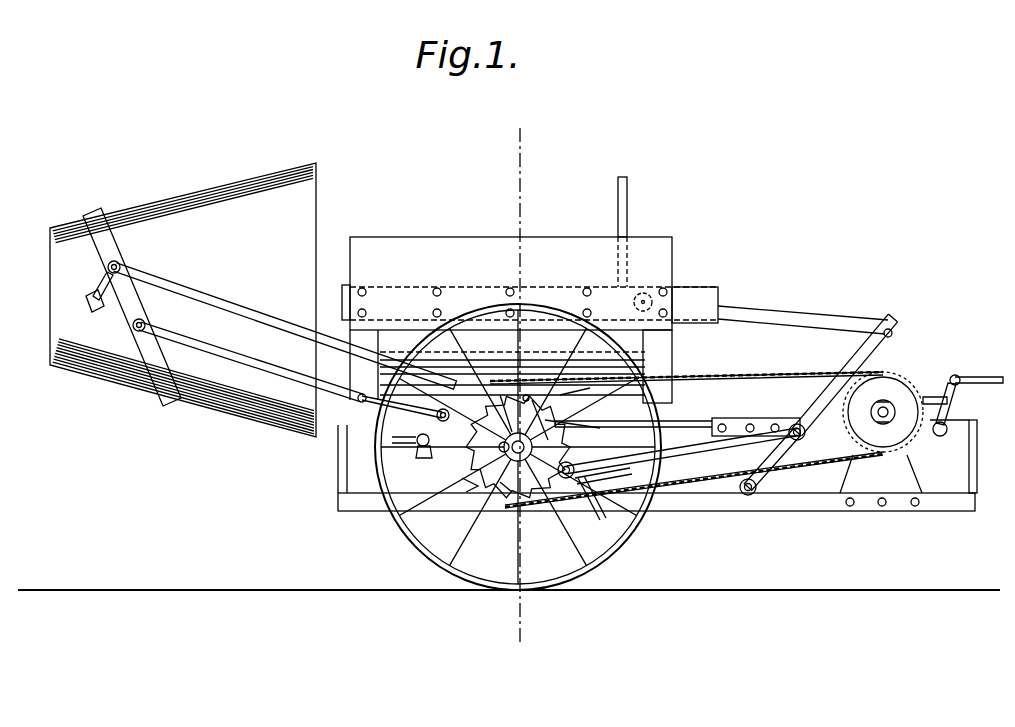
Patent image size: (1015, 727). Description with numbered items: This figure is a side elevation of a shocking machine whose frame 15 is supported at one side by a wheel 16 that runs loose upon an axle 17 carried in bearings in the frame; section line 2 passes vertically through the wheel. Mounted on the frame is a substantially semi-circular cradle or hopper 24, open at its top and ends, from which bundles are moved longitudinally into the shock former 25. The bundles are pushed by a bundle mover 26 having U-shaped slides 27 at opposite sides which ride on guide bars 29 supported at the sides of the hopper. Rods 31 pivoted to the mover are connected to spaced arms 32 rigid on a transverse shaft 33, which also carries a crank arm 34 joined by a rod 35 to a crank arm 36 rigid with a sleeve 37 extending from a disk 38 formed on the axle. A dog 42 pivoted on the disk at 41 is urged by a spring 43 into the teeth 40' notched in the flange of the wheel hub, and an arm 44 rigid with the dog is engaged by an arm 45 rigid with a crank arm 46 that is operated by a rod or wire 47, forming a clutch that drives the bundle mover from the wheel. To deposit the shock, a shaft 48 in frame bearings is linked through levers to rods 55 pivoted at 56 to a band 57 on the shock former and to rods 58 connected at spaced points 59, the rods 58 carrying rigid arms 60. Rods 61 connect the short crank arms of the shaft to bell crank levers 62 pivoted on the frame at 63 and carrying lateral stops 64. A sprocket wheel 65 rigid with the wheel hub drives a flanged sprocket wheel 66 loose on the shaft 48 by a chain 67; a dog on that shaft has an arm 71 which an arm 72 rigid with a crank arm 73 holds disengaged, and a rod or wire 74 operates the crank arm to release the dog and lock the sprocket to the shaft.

The section line 2- 2 is at (498, 130).
The frame 15 is at (965, 432).
The wheel 16 is at (406, 530).
The axle 17 is at (518, 446).
The cradle or hopper 24 is at (554, 247).
The shock former 25 is at (235, 195).
The bundle mover 26 is at (628, 196).
The U-shaped slides 27 is at (678, 286).
The guide bars 29 is at (716, 292).
The rods 31 is at (762, 321).
The arms 32 is at (856, 362).
The shaft 33 is at (748, 500).
The crank arm 34 is at (775, 458).
The rod 35 is at (685, 450).
The crank arm 36 is at (568, 479).
The sleeve 37 is at (509, 451).
The disk 38 is at (506, 492).
The teeth 40' is at (493, 383).
The pivot 41 is at (548, 420).
The dog 42 is at (533, 400).
The spring 43 is at (527, 394).
The arm 44 is at (592, 388).
The arm 45 is at (610, 472).
The crank arm 46 is at (640, 496).
The rod or wire 47 is at (690, 421).
The shaft 48 is at (903, 428).
The rods 55 is at (336, 394).
The pivots 56 is at (147, 328).
The band 57 is at (113, 250).
The rods 58 is at (253, 323).
The points of connection 59 is at (124, 268).
The arms 60 is at (95, 293).
The rods 61 is at (443, 408).
The bell crank levers 62 is at (410, 452).
The pivot 63 is at (415, 467).
The stops 64 is at (361, 386).
The sprocket wheel 65 is at (470, 489).
The sprocket wheel 66 is at (892, 382).
The chain 67 is at (745, 379).
The arm 71 is at (936, 396).
The arm 72 is at (952, 410).
The crank arm 73 is at (958, 386).
The rod or wire 74 is at (1001, 375).